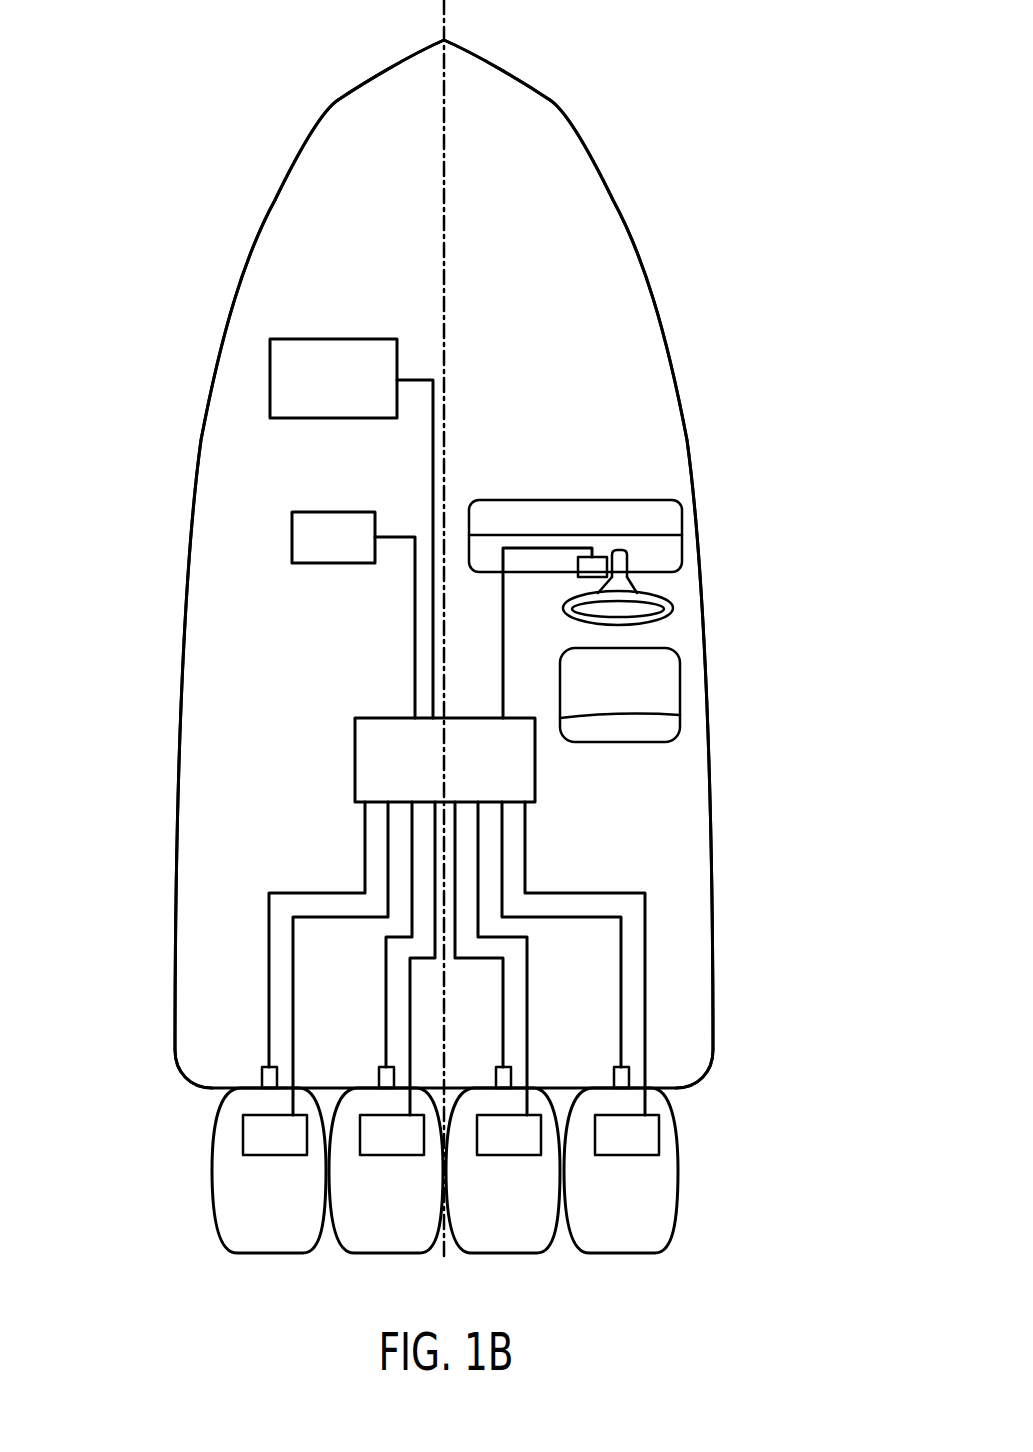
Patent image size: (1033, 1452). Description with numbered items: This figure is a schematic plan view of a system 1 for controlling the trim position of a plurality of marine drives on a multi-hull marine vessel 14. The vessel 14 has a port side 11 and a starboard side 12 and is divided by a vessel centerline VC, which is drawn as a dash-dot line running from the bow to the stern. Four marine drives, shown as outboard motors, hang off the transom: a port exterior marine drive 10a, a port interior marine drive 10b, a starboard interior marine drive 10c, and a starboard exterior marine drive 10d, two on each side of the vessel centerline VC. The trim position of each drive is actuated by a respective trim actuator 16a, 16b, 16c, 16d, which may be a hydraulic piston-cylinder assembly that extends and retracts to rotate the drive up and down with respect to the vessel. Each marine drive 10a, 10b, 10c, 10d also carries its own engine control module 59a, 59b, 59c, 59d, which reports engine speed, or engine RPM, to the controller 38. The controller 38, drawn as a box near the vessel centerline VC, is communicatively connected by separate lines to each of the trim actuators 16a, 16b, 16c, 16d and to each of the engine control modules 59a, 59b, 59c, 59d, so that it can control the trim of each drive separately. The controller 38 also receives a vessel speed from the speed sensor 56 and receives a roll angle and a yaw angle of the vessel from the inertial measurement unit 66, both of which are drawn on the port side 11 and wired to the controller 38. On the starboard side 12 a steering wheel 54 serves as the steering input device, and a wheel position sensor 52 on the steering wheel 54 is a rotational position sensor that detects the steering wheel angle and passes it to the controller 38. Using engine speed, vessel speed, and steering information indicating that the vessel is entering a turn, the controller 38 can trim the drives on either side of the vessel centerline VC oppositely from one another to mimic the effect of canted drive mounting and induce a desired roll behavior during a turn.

The system 1 is at (246, 158).
The vessel centerline VC is at (444, 22).
The port side 11 is at (229, 324).
The starboard side 12 is at (661, 350).
The multi-hull marine vessel 14 is at (611, 206).
The speed sensor 56 is at (331, 339).
The inertial measurement unit 66 is at (333, 512).
The wheel position sensor 52 is at (596, 566).
The steering wheel 54 is at (668, 610).
The controller 38 is at (355, 762).
The trim actuator 16a is at (261, 1078).
The trim actuator 16b is at (378, 1078).
The trim actuator 16c is at (495, 1078).
The trim actuator 16d is at (613, 1078).
The engine control module 59a is at (275, 1155).
The engine control module 59b is at (392, 1155).
The engine control module 59c is at (509, 1155).
The engine control module 59d is at (627, 1155).
The port exterior marine drive 10a is at (268, 1256).
The port interior marine drive 10b is at (385, 1256).
The starboard interior marine drive 10c is at (502, 1256).
The starboard exterior marine drive 10d is at (620, 1256).